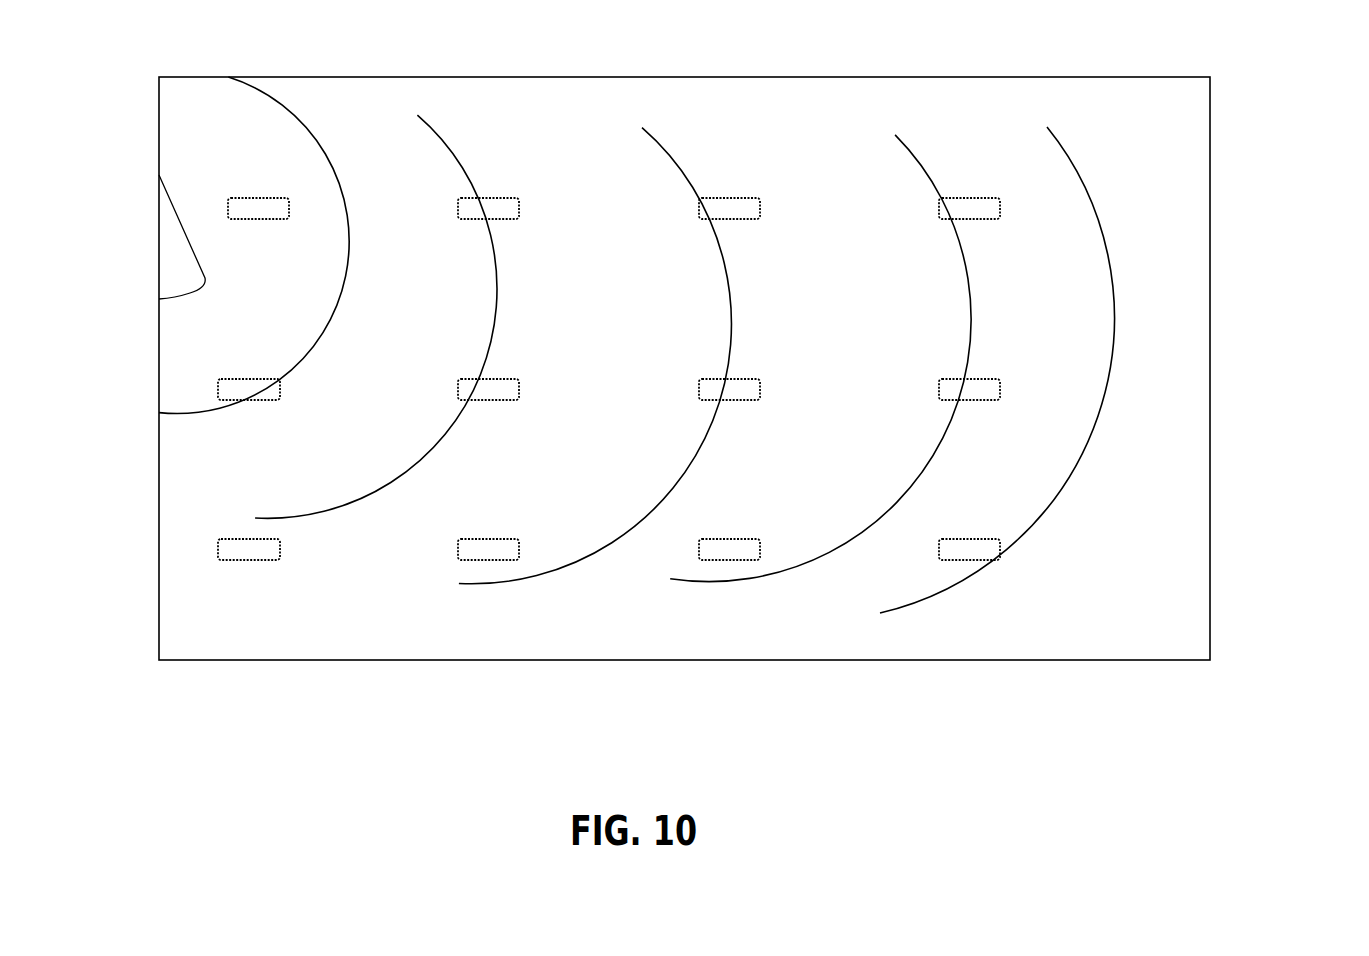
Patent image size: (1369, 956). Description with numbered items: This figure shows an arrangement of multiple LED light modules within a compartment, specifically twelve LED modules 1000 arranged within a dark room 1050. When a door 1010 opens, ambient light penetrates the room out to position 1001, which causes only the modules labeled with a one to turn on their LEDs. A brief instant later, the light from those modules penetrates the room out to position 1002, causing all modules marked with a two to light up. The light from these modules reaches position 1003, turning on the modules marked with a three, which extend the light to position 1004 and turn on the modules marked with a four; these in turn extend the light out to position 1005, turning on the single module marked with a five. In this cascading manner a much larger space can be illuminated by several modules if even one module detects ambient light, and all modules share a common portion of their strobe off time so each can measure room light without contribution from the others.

The LED modules 1000 is at (617, 354).
The position 1001 is at (307, 97).
The position 1002 is at (460, 115).
The position 1003 is at (684, 124).
The position 1004 is at (927, 123).
The position 1005 is at (1088, 120).
The door 1010 is at (148, 232).
The dark room 1050 is at (1224, 321).